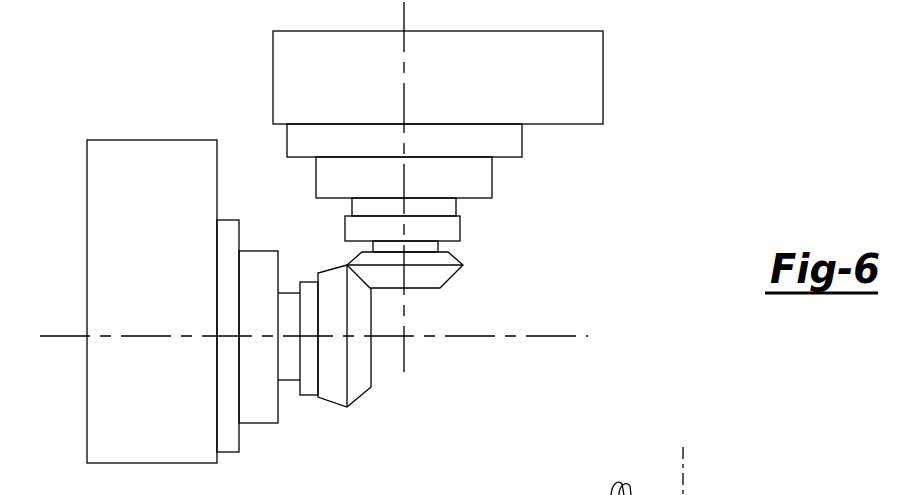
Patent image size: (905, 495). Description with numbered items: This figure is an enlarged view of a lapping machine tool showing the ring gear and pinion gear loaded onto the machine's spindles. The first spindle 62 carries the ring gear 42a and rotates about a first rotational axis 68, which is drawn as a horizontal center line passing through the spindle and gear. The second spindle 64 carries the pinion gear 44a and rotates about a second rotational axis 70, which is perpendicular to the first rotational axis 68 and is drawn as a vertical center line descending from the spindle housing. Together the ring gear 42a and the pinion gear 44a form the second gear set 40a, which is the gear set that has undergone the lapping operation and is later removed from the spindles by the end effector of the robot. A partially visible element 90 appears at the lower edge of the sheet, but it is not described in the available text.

The second rotational axis 70 is at (477, 179).
The second spindle 64 is at (452, 227).
The first spindle 62 is at (288, 302).
The first rotational axis 68 is at (560, 336).
The second gear set 40a is at (435, 347).
The pinion gear 44a is at (438, 283).
The ring gear 42a is at (357, 383).
The component 90 is at (685, 473).